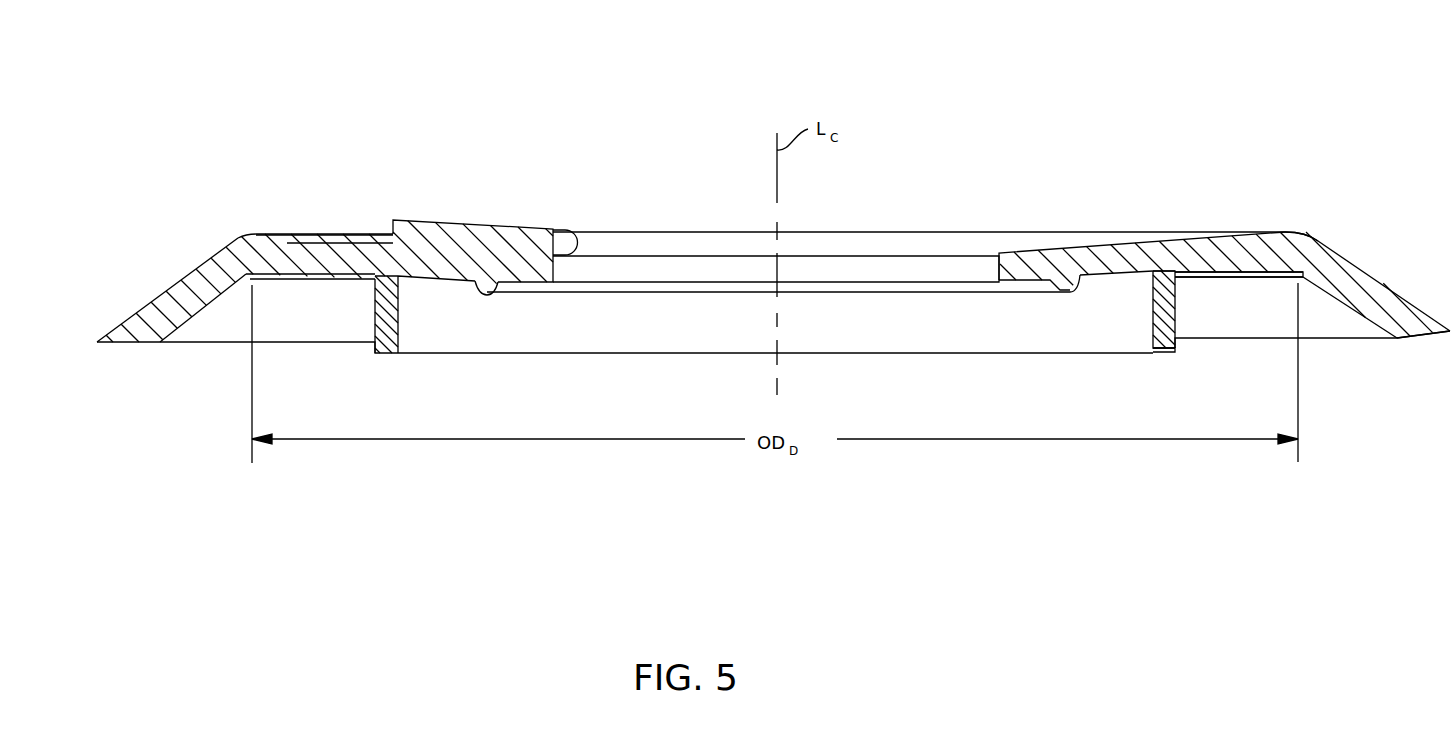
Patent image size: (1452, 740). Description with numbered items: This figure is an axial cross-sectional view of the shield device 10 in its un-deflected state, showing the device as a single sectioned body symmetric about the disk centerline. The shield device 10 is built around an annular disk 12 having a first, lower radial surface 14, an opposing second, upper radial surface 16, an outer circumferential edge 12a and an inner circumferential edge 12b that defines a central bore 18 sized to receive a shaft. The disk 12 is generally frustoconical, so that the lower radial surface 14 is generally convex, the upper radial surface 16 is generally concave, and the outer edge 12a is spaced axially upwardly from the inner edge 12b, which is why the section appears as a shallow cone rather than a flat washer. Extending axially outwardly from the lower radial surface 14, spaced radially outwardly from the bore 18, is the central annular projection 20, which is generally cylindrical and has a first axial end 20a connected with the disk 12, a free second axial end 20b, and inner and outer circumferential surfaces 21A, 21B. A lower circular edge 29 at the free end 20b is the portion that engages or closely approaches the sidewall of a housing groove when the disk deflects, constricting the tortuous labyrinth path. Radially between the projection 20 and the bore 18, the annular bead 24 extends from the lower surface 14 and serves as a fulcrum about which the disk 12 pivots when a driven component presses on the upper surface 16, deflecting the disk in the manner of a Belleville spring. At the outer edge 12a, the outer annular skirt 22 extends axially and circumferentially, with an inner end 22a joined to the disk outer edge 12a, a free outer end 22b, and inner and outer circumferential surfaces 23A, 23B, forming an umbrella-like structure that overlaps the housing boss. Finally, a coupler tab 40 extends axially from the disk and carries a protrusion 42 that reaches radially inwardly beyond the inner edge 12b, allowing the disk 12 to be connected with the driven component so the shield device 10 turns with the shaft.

The shield device 10 is at (627, 99).
The annular disk 12 is at (1192, 232).
The outer circumferential edge 12a is at (253, 242).
The inner circumferential edge 12b is at (565, 275).
The first radial surface 14 is at (1217, 275).
The second radial surface 16 is at (1118, 245).
The central bore 18 is at (907, 265).
The central annular projection 20 is at (372, 321).
The first axial end 20a is at (1165, 268).
The second axial end 20b is at (1168, 350).
The inner circumferential surface 21A is at (400, 310).
The outer circumferential surface 21B is at (373, 299).
The outer annular skirt 22 is at (165, 278).
The inner end of skirt 22a is at (1308, 238).
The outer end of skirt 22b is at (1390, 340).
The inner circumferential surface of skirt 23A is at (202, 327).
The outer circumferential surface of skirt 23B is at (152, 298).
The annular bead 24 is at (488, 297).
The lower circular edge 29 is at (1148, 350).
The coupler tab 40 is at (468, 226).
The protrusion 42 is at (562, 231).